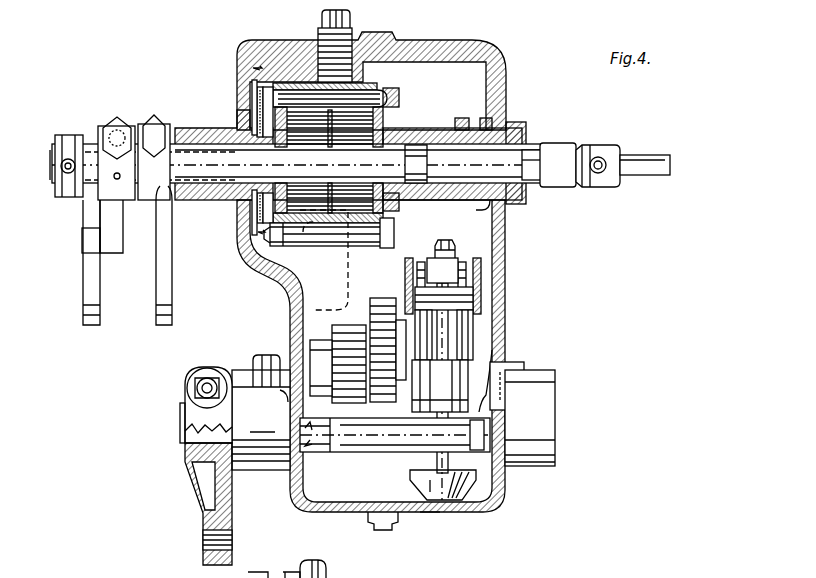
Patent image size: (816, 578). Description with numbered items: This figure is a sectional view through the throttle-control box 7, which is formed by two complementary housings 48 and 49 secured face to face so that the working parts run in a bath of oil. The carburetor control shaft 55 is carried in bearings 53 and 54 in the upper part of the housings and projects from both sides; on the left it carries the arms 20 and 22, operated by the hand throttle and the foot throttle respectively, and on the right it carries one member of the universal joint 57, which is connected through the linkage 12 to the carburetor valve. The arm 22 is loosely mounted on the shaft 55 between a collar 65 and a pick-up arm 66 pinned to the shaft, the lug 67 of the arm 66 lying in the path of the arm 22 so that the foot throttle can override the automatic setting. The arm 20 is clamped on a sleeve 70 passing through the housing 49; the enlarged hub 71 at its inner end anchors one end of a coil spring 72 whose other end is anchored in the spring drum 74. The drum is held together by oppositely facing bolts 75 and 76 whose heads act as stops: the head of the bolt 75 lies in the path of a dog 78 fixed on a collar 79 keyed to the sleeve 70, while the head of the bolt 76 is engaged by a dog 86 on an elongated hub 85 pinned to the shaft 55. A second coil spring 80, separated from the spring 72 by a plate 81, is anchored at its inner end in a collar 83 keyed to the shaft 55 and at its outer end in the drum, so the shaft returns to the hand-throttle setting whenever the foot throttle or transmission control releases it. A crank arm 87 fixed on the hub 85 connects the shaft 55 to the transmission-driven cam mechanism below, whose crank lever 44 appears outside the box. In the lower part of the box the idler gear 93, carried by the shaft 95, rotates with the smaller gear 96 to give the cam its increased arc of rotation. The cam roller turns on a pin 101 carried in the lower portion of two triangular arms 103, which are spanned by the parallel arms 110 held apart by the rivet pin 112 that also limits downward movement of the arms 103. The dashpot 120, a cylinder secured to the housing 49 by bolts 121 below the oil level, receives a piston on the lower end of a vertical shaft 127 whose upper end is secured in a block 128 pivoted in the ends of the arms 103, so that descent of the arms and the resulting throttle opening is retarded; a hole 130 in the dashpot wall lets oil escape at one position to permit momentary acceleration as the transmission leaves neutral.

The box 7 is at (432, 512).
The linkage 12 is at (270, 162).
The arm 20 is at (173, 260).
The arm 22 is at (82, 290).
The crank lever 44 is at (226, 504).
The housing 48 is at (503, 497).
The housing 49 is at (291, 305).
The bearing 53 is at (525, 128).
The bearing 54 is at (197, 128).
The carburetor control shaft 55 is at (530, 150).
The universal joint 57 is at (604, 145).
The collar 65 is at (70, 135).
The pick-up arm 66 is at (120, 237).
The lug 67 is at (80, 239).
The sleeve 70 is at (205, 150).
The enlarged hub 71 is at (252, 245).
The coil spring 72 is at (290, 248).
The spring drum 74 is at (290, 83).
The bolt 75 is at (368, 72).
The bolt 76 is at (386, 246).
The dog 78 is at (246, 230).
The collar 79 is at (238, 216).
The second coil spring 80 is at (357, 100).
The plate 81 is at (322, 240).
The collar 83 is at (398, 112).
The elongated hub 85 is at (430, 128).
The dog 86 is at (412, 200).
The crank arm 87 is at (440, 128).
The idler gear 93 is at (393, 292).
The shaft 95 is at (492, 332).
The smaller gear 96 is at (332, 333).
The pin 101 is at (470, 340).
The arms 103 is at (446, 240).
The arms 110 is at (412, 258).
The rivet pin 112 is at (473, 296).
The dashpot 120 is at (510, 466).
The bolts 121 is at (490, 428).
The vertical shaft 127 is at (460, 330).
The block 128 is at (458, 268).
The hole 130 is at (505, 400).